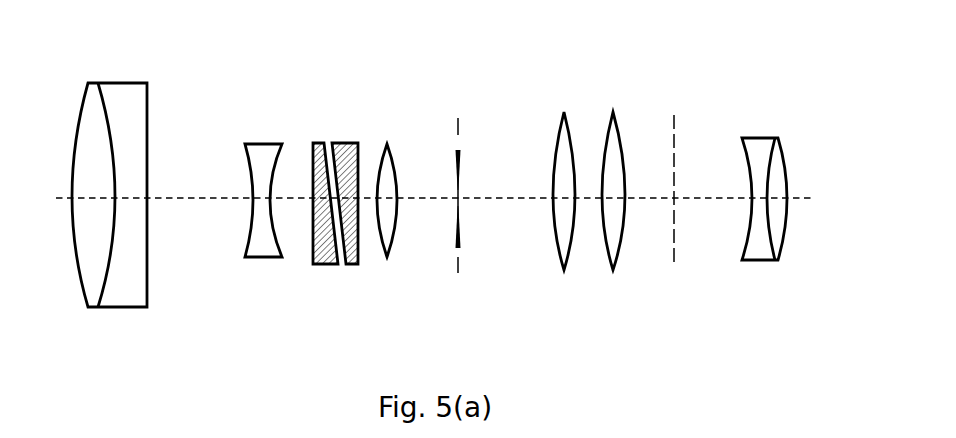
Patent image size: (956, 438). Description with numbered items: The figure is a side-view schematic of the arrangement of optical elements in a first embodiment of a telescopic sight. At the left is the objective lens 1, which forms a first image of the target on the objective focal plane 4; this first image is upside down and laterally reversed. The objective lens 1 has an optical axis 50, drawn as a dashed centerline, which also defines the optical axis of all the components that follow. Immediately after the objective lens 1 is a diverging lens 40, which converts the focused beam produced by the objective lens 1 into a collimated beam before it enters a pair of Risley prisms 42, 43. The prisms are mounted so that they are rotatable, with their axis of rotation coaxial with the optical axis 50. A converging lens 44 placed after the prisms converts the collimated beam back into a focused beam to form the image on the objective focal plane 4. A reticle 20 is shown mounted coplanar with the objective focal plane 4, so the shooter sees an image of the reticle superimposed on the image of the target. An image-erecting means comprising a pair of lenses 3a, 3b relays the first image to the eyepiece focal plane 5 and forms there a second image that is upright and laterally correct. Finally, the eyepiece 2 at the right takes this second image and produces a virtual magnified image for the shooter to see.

The objective lens 1 is at (147, 282).
The optical axis 50 is at (158, 198).
The diverging lens 40 is at (263, 257).
The Risley prism 42 is at (320, 264).
The Risley prism 43 is at (355, 264).
The converging lens 44 is at (387, 257).
The objective focal plane 4 is at (458, 120).
The reticle 20 is at (460, 155).
The lens 3a is at (560, 257).
The lens 3b is at (608, 253).
The eyepiece focal plane 5 is at (674, 260).
The eyepiece 2 is at (758, 260).